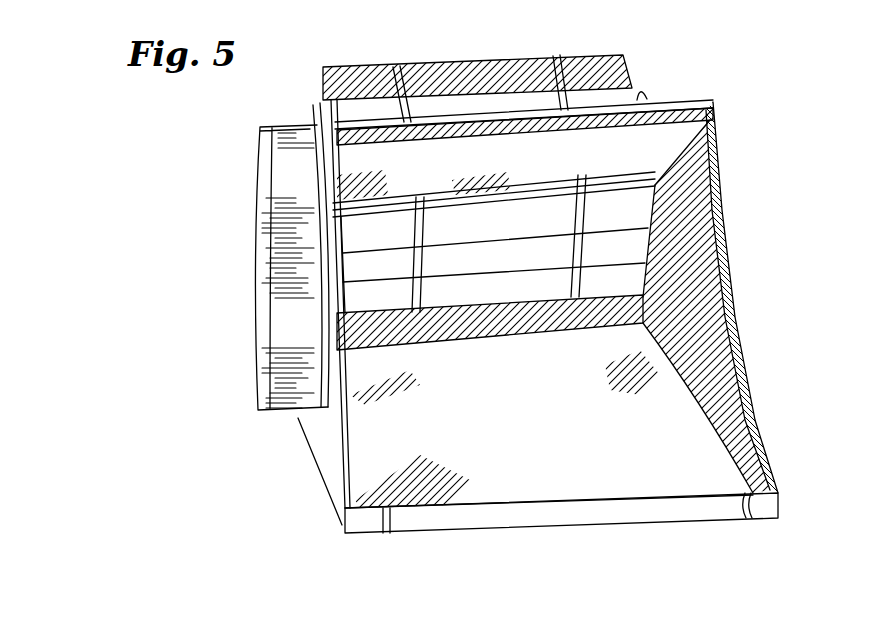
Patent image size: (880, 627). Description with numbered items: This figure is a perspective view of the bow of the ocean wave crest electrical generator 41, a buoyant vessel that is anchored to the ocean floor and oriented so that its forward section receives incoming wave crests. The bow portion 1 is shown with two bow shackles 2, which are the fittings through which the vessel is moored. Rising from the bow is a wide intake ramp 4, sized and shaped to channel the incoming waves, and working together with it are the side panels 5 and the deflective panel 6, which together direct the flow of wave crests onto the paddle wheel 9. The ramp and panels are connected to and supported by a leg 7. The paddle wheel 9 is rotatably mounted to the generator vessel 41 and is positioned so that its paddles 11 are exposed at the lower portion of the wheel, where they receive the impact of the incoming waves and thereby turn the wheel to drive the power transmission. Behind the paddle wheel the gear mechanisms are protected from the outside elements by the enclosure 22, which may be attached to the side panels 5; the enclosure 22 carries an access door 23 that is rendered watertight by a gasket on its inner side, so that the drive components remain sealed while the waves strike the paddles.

The bow portion 1 is at (570, 543).
The bow shackle 2 is at (386, 535).
The intake ramp 4 is at (467, 428).
The side panel 5 is at (753, 406).
The deflective panel 6 is at (650, 141).
The leg 7 is at (715, 243).
The paddle wheel 9 is at (547, 60).
The paddle 11 is at (587, 57).
The enclosure 22 is at (300, 217).
The access door 23 is at (273, 300).
The ocean wave crest electrical generator 41 is at (137, 249).